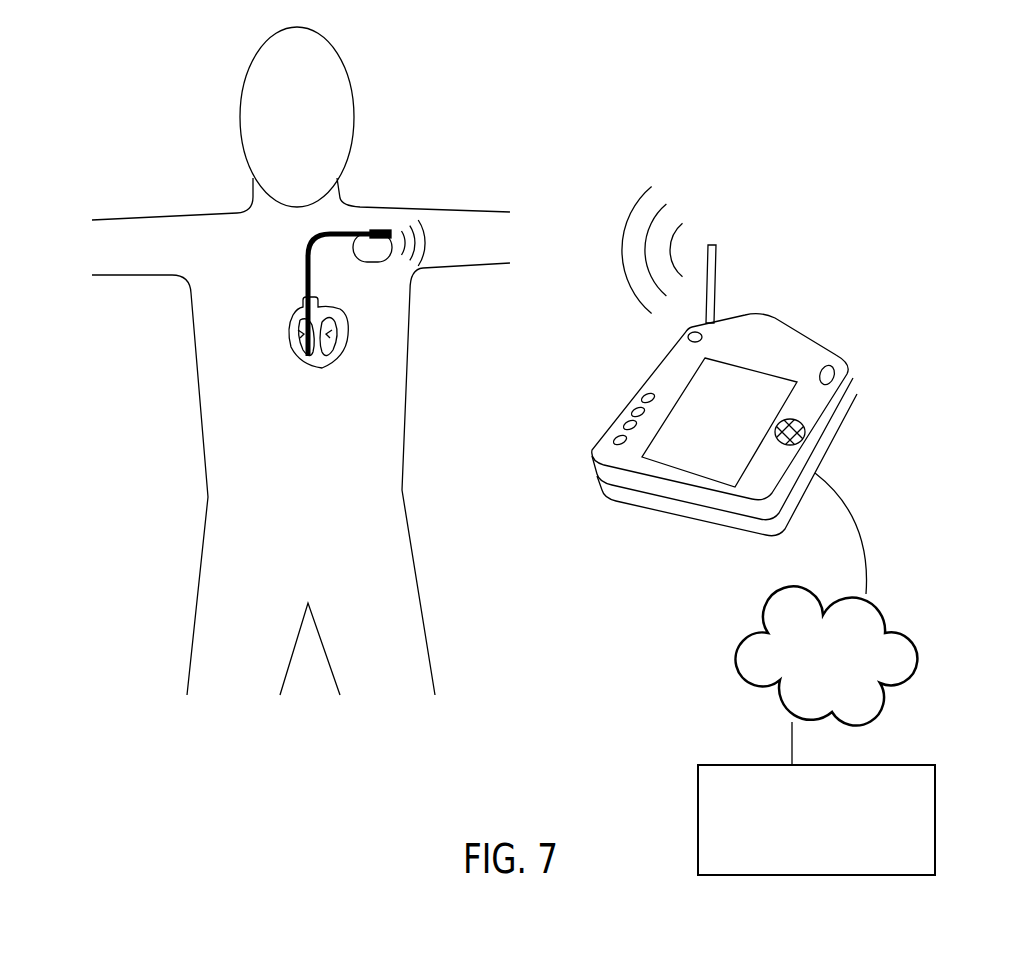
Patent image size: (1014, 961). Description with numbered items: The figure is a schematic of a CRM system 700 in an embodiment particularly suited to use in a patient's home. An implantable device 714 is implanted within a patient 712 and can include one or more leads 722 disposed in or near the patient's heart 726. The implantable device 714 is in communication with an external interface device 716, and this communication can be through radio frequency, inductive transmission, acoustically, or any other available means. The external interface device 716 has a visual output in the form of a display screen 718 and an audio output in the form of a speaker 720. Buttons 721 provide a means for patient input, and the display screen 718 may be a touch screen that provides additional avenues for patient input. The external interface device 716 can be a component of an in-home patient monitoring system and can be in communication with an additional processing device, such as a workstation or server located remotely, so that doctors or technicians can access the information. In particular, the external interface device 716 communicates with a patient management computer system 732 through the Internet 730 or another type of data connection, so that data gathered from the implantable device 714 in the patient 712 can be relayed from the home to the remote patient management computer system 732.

The patient monitoring system 700 is at (578, 138).
The patient 712 is at (163, 247).
The implantable device 714 is at (385, 252).
The external interface device 716 is at (767, 338).
The display screen 718 is at (678, 447).
The speaker 720 is at (805, 428).
The buttons 721 is at (642, 398).
The leads 722 is at (307, 253).
The heart 726 is at (327, 363).
The Internet 730 is at (850, 670).
The patient management computer system 732 is at (710, 765).